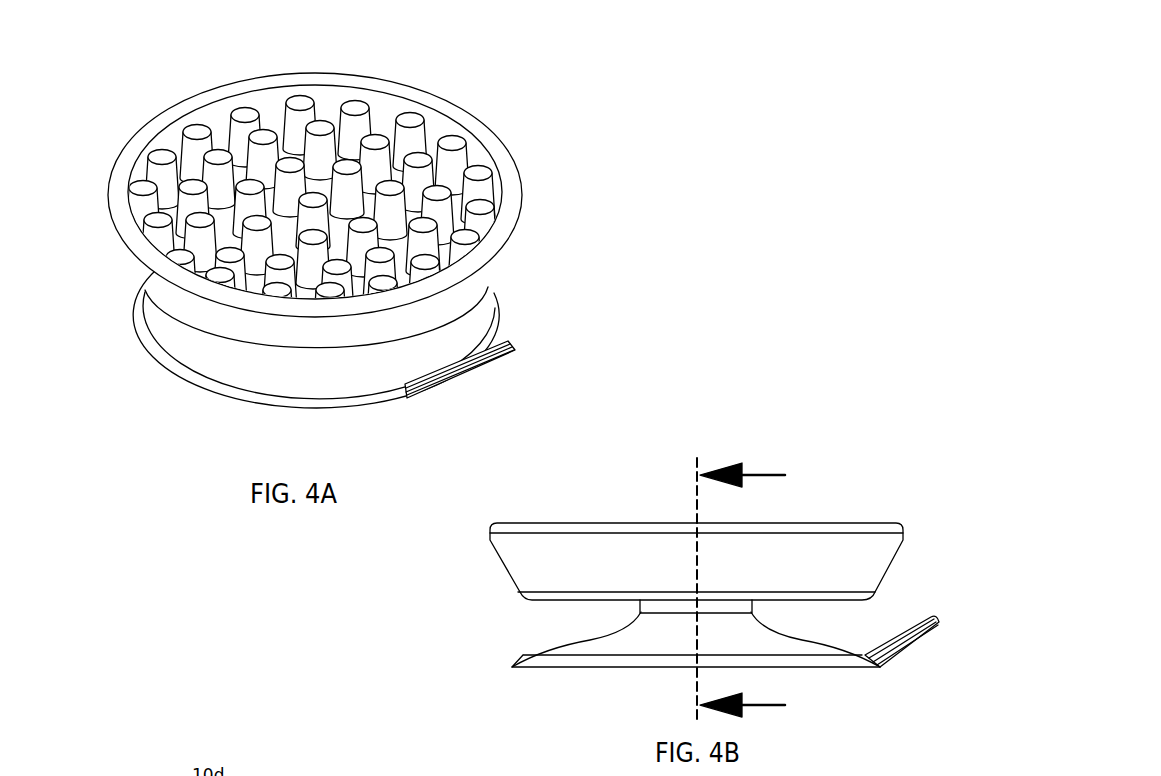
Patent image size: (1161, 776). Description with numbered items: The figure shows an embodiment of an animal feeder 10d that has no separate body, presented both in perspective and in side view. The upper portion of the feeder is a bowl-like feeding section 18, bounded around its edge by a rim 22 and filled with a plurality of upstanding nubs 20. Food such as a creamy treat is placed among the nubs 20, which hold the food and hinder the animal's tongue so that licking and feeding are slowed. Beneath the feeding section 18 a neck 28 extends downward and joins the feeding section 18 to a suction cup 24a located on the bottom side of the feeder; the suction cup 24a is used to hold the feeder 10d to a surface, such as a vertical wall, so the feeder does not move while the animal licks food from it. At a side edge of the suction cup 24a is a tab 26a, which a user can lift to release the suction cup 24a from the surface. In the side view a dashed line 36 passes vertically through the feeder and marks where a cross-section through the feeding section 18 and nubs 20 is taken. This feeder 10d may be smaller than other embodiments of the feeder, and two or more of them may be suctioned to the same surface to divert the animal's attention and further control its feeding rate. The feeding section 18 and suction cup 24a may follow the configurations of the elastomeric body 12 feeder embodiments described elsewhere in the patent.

In FIG. 4A, the animal feeder 10d is at (344, 244).
In FIG. 4B, the animal feeder 10d is at (676, 543).
In FIG. 4A, the elastomeric body 12 is at (188, 382).
In FIG. 4A, the feeding section 18 is at (545, 196).
In FIG. 4B, the feeding section 18 is at (443, 582).
In FIG. 4A, the nubs 20 is at (322, 132).
In FIG. 4A, the rim 22 is at (128, 135).
In FIG. 4B, the rim 22 is at (897, 553).
In FIG. 4B, the suction cup 24a is at (558, 668).
In FIG. 4A, the tab 26a is at (512, 350).
In FIG. 4B, the tab 26a is at (917, 633).
In FIG. 4A, the neck 28 is at (297, 372).
In FIG. 4B, the neck 28 is at (592, 617).
In FIG. 4B, the line 36 is at (698, 488).